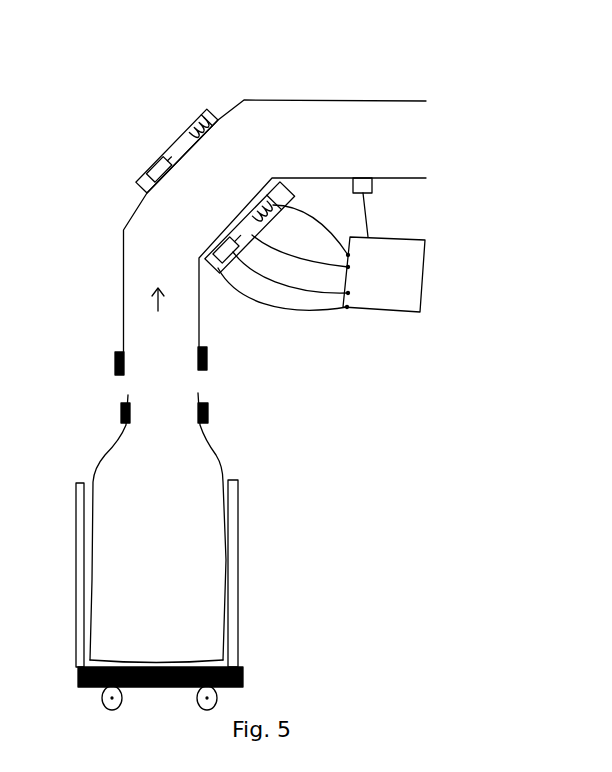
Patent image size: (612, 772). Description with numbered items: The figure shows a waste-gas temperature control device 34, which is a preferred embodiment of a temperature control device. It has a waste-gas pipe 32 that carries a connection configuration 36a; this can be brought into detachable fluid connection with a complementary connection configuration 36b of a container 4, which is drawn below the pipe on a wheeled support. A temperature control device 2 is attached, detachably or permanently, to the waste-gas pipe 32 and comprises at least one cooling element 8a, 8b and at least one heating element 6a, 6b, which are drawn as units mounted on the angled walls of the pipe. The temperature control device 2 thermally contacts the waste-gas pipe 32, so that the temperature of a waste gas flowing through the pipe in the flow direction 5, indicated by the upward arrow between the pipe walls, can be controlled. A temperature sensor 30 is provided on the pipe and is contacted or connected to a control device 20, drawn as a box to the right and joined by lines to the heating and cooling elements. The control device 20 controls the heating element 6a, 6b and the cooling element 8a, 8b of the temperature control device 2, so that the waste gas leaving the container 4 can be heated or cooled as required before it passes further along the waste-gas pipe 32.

The waste-gas temperature control device 34 is at (55, 76).
The waste-gas pipe 32 is at (327, 115).
The temperature control device 2 is at (216, 274).
The heating element 6a is at (278, 211).
The heating element 6b is at (193, 119).
The cooling element 8a is at (236, 257).
The cooling element 8b is at (158, 166).
The control device 20 is at (408, 275).
The temperature sensor 30 is at (372, 184).
The conveying direction 5 is at (164, 301).
The connection configuration 36a is at (115, 360).
The complementary connection configuration 36b is at (121, 413).
The container 4 is at (160, 555).